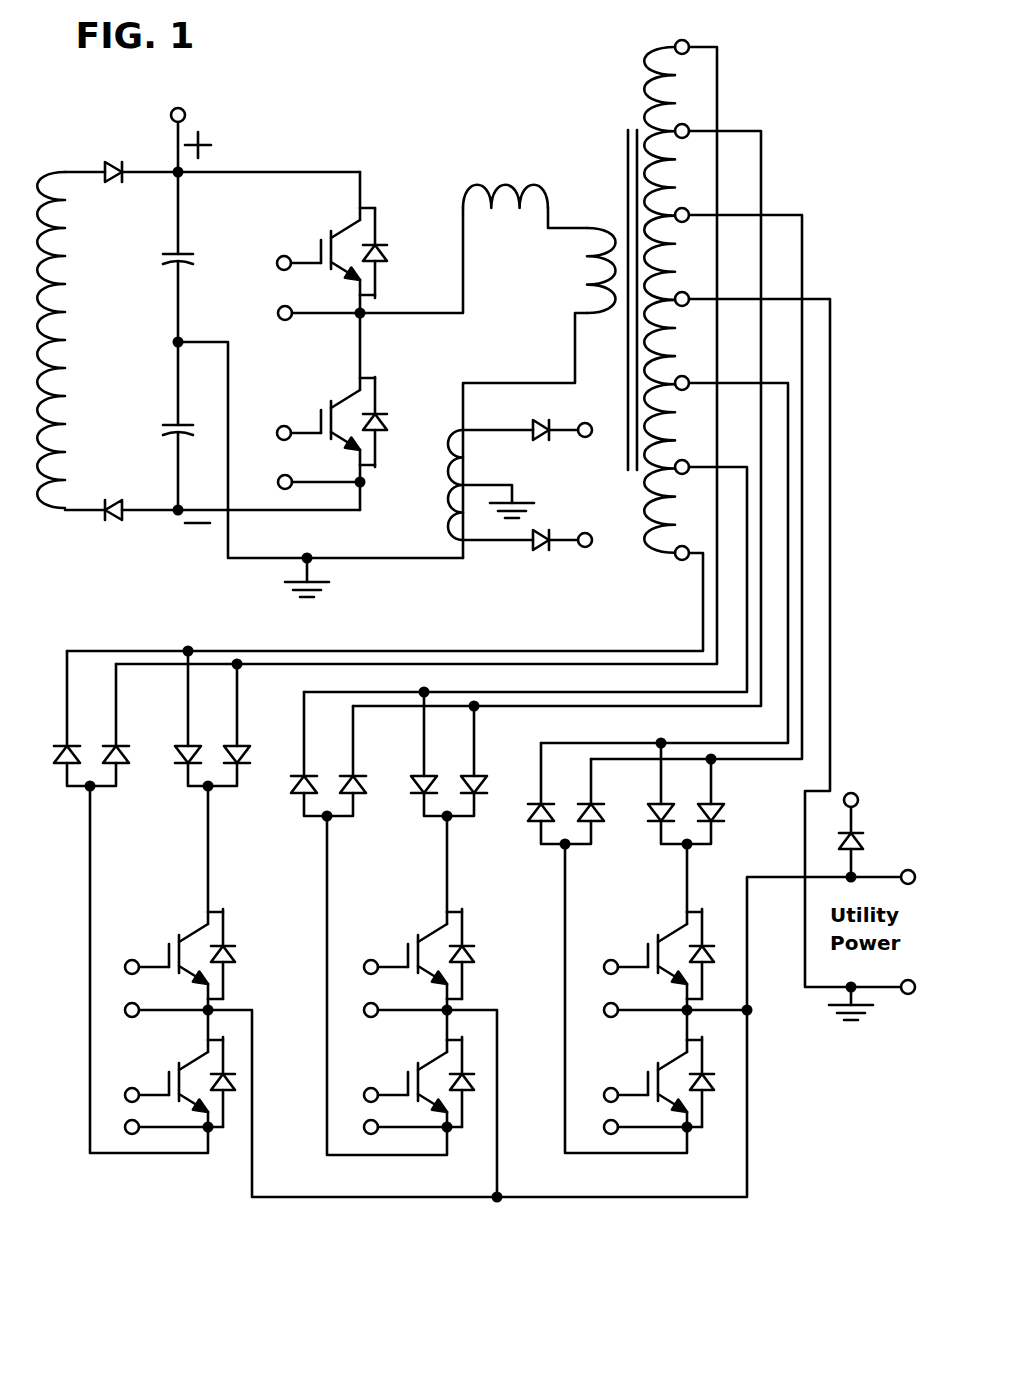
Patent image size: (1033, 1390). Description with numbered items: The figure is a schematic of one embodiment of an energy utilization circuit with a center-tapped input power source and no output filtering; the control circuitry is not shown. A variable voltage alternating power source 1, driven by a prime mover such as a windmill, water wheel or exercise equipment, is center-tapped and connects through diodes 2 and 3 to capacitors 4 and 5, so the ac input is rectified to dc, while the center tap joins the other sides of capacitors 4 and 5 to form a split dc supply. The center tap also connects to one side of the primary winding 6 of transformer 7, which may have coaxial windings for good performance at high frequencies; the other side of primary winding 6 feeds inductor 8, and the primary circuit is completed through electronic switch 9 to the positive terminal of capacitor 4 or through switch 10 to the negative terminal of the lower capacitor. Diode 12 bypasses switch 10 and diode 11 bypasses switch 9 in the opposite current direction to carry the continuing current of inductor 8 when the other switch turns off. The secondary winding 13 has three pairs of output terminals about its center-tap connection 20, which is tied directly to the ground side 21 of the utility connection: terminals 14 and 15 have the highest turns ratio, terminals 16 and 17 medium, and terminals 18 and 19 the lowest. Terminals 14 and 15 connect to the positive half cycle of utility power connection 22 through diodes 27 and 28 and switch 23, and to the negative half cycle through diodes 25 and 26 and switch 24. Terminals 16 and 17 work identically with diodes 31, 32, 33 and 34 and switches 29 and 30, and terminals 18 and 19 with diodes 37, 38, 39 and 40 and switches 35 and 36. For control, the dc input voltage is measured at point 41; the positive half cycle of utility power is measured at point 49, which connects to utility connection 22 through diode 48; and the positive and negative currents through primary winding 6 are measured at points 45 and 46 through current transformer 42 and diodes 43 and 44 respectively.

The variable voltage alternating power source 1 is at (44, 172).
The diode 2 is at (112, 160).
The diode 3 is at (120, 520).
The capacitor 4 is at (192, 258).
The capacitor 5 is at (168, 428).
The primary winding 6 is at (597, 228).
The transformer 7 is at (628, 152).
The inductor 8 is at (500, 185).
The electronic switch 9 is at (321, 250).
The switch 10 is at (321, 430).
The diode 11 is at (390, 258).
The diode 12 is at (387, 422).
The secondary winding 13 is at (646, 62).
The transformer output terminal 14 is at (687, 42).
The transformer output terminal 15 is at (686, 548).
The transformer output terminal 16 is at (685, 126).
The transformer output terminal 17 is at (685, 462).
The transformer output terminal 18 is at (685, 210).
The transformer output terminal 19 is at (685, 378).
The center-tap connection 20 is at (685, 294).
The ground side of utility power connection 21 is at (908, 996).
The utility power connection 22 is at (908, 870).
The switch 23 is at (168, 964).
The switch 24 is at (168, 1092).
The diode 25 is at (66, 762).
The diode 26 is at (118, 762).
The diode 27 is at (188, 762).
The diode 28 is at (238, 762).
The switch 29 is at (407, 964).
The switch 30 is at (407, 1092).
The diode 31 is at (304, 792).
The diode 32 is at (354, 792).
The diode 33 is at (424, 792).
The diode 34 is at (474, 792).
The switch 35 is at (647, 960).
The switch 36 is at (647, 1090).
The diode 37 is at (540, 822).
The diode 38 is at (592, 822).
The diode 39 is at (660, 822).
The diode 40 is at (712, 822).
The measurement point 41 is at (186, 115).
The current transformer 42 is at (452, 508).
The diode 43 is at (539, 442).
The diode 44 is at (539, 552).
The measurement point 45 is at (585, 438).
The measurement point 46 is at (585, 548).
The diode 48 is at (862, 840).
The measurement point 49 is at (852, 793).